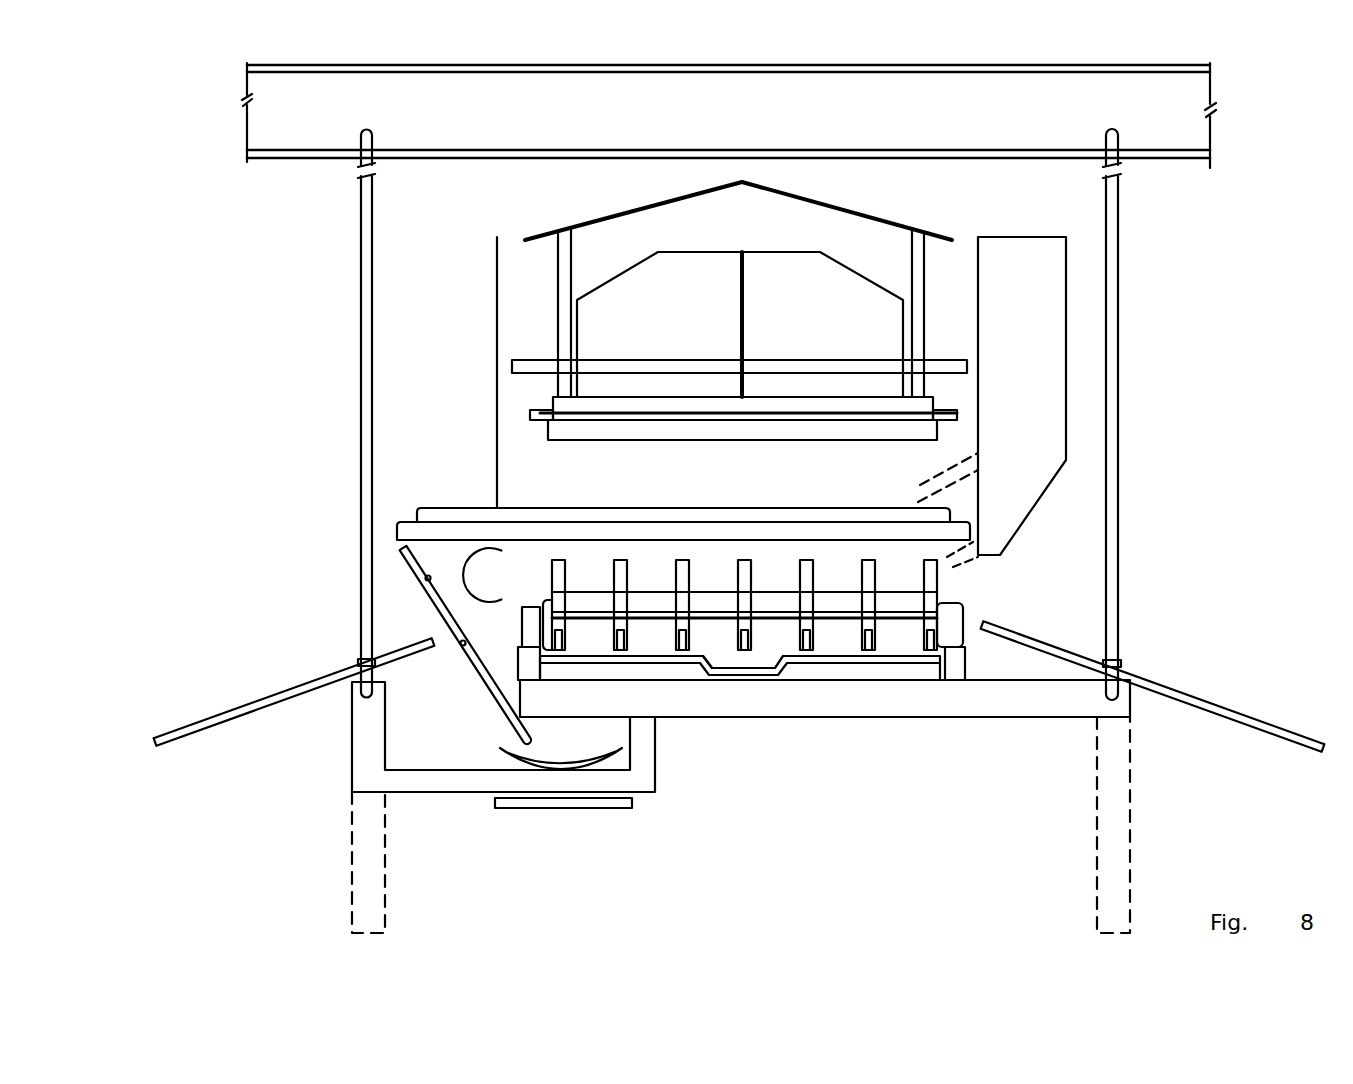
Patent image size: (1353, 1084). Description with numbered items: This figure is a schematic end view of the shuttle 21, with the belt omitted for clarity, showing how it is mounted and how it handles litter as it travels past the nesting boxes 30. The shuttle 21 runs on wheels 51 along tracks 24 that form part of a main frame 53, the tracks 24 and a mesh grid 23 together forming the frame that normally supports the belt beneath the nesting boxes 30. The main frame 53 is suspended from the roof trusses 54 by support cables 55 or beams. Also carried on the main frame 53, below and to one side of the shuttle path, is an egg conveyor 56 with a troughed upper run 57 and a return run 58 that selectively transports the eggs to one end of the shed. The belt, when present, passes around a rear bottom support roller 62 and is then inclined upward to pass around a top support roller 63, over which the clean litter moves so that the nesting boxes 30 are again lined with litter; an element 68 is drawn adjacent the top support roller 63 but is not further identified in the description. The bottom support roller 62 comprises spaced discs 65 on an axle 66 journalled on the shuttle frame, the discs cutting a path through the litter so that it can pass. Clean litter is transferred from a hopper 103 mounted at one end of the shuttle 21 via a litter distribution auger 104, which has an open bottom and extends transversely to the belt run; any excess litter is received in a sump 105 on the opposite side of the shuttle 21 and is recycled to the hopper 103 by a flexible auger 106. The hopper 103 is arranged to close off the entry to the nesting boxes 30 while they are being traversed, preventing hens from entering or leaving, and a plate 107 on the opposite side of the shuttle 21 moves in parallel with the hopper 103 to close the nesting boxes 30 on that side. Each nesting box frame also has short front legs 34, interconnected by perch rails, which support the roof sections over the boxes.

The shuttle 21 is at (478, 350).
The mesh grid 23 is at (880, 677).
The tracks 24 is at (528, 668).
The nesting boxes 30 is at (760, 252).
The short front legs 34 is at (893, 223).
The wheels 51 is at (962, 622).
The main frame 53 is at (1050, 720).
The roof trusses 54 is at (1214, 137).
The support cables 55 is at (1113, 258).
The egg conveyor 56 is at (569, 815).
The troughed upper run 57 is at (620, 750).
The return run 58 is at (632, 803).
The rear bottom support roller 62 is at (752, 660).
The top support roller 63 is at (773, 432).
The spaced discs 65 is at (683, 568).
The axle 66 is at (594, 600).
The upper tray 68 is at (723, 406).
The hopper 103 is at (1052, 338).
The litter distribution auger 104 is at (963, 565).
The sump 105 is at (478, 573).
The flexible auger 106 is at (915, 492).
The plate 107 is at (496, 275).